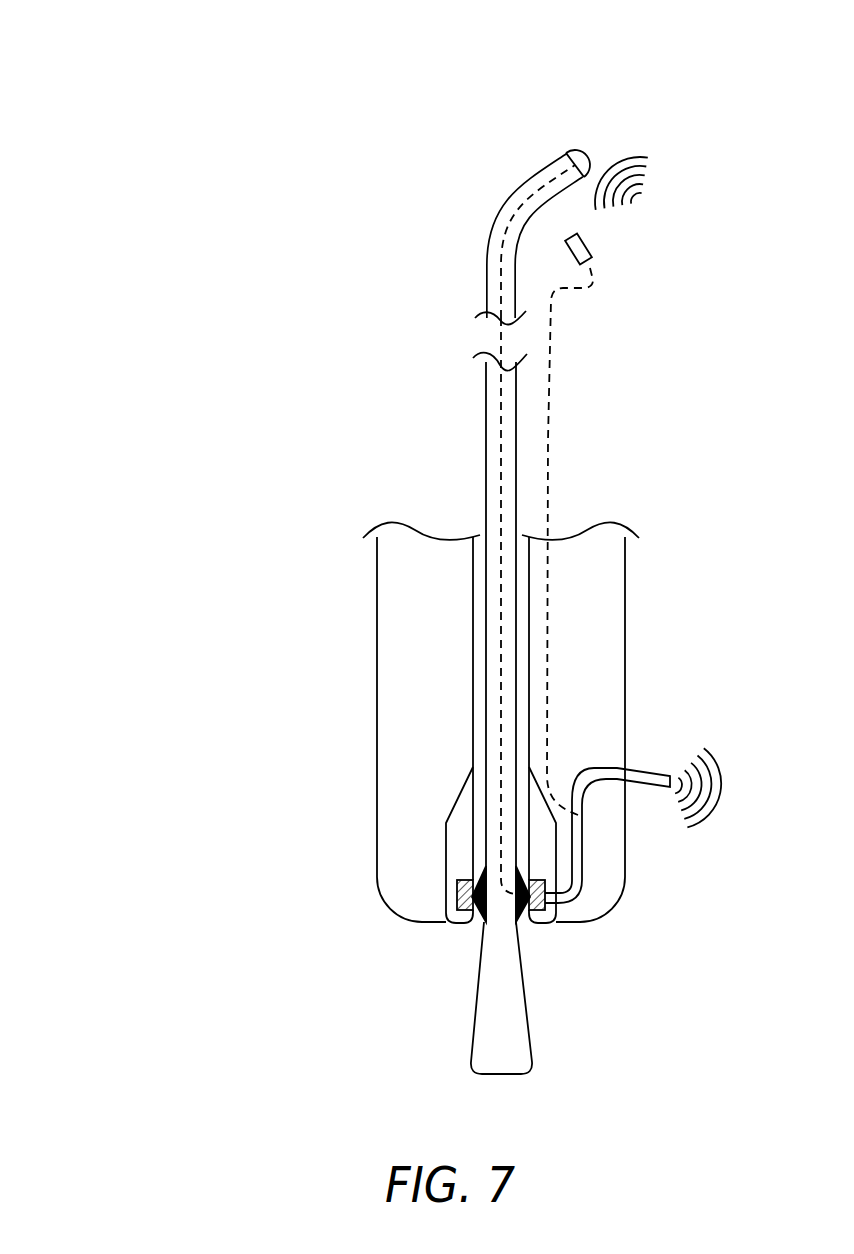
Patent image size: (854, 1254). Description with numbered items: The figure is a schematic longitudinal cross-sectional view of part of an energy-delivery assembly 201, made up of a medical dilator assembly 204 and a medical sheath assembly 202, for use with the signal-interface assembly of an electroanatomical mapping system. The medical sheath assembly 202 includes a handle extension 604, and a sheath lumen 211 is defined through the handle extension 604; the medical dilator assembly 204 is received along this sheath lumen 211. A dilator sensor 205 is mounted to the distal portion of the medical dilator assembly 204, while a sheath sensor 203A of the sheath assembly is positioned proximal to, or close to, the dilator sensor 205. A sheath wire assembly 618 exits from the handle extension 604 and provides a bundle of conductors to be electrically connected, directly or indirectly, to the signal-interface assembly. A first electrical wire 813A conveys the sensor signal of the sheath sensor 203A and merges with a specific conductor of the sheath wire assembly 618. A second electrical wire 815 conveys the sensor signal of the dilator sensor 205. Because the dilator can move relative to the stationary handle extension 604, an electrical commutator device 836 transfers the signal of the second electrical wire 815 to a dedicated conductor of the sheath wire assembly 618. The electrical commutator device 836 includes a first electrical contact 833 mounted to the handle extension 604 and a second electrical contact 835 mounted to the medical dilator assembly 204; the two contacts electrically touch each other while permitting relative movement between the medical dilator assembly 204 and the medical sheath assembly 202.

The energy-delivery assembly 201 is at (167, 343).
The medical sheath assembly 202 is at (287, 632).
The medical dilator assembly 204 is at (503, 230).
The dilator sensor 205 is at (574, 158).
The sheath sensor 203A is at (587, 242).
The first electrical wire 813A is at (550, 426).
The second electrical wire 815 is at (500, 339).
The sheath lumen 211 is at (480, 535).
The handle extension 604 is at (377, 633).
The sheath wire assembly 618 is at (658, 775).
The electrical commutator device 836 is at (379, 1053).
The first electrical contact 833 is at (458, 895).
The second electrical contact 835 is at (472, 902).